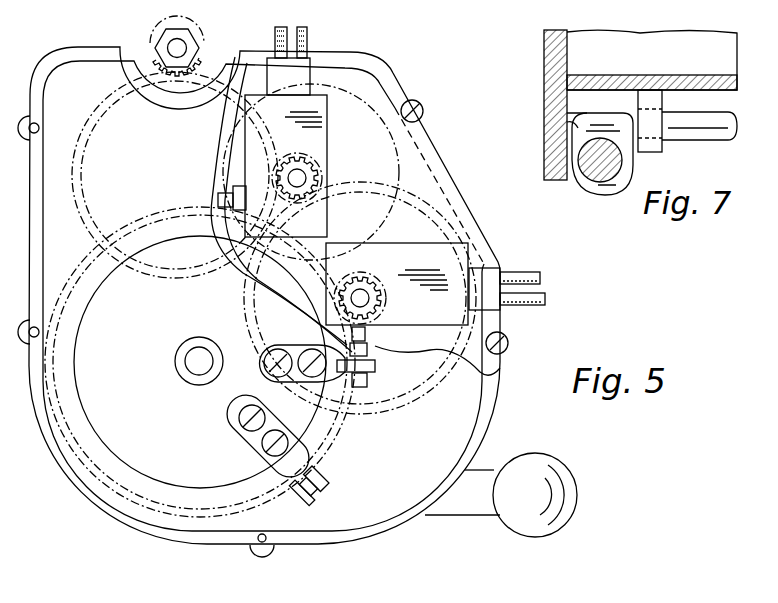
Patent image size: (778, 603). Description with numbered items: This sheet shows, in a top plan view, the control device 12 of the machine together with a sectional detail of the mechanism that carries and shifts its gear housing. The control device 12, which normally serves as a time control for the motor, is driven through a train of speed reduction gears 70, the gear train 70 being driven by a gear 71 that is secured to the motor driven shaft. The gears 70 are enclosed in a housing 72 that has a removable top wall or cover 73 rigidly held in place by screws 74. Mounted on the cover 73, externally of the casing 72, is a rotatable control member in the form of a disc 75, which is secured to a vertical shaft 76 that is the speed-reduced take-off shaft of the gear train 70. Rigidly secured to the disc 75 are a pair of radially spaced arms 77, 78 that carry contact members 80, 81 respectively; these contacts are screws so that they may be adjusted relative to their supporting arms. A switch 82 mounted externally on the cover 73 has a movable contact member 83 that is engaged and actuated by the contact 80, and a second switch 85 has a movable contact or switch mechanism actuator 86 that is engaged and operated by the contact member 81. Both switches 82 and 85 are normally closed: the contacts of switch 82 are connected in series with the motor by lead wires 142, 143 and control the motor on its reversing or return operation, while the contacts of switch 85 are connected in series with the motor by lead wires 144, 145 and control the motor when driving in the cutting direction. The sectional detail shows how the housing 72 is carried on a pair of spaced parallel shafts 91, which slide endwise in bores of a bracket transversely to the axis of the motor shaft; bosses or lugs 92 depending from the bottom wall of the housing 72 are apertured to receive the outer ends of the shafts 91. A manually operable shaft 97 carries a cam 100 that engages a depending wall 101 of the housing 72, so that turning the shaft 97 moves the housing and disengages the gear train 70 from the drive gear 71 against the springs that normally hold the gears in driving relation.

In FIG. 5, the control device 12 is at (392, 423).
In FIG. 5, the train of speed reduction gears 70 is at (368, 100).
In FIG. 5, the gear 71 is at (203, 55).
In FIG. 5, the housing 72 is at (70, 482).
In FIG. 7, the housing 72 is at (545, 53).
In FIG. 5, the removable top wall or cover 73 is at (415, 175).
In FIG. 5, the screws 74 is at (422, 102).
In FIG. 5, the disc 75 is at (152, 478).
In FIG. 5, the vertical shaft 76 is at (196, 372).
In FIG. 5, the arm 77 is at (288, 470).
In FIG. 5, the arm 78 is at (346, 395).
In FIG. 5, the contact member 80 is at (377, 357).
In FIG. 5, the contact member 81 is at (315, 497).
In FIG. 5, the switch 82 is at (423, 325).
In FIG. 5, the movable contact member 83 is at (385, 318).
In FIG. 5, the switch 85 is at (327, 148).
In FIG. 5, the movable contact or switch mechanism actuator 86 is at (229, 186).
In FIG. 7, the supports or shafts 91 is at (700, 135).
In FIG. 7, the bosses or lugs 92 is at (662, 102).
In FIG. 5, the shaft 97 is at (444, 510).
In FIG. 7, the shaft 97 is at (604, 183).
In FIG. 7, the cam 100 is at (583, 180).
In FIG. 7, the depending wall 101 is at (547, 112).
In FIG. 5, the lead wire 142 is at (512, 275).
In FIG. 5, the lead wire 143 is at (547, 305).
In FIG. 5, the lead wire 144 is at (278, 30).
In FIG. 5, the lead wire 145 is at (310, 40).